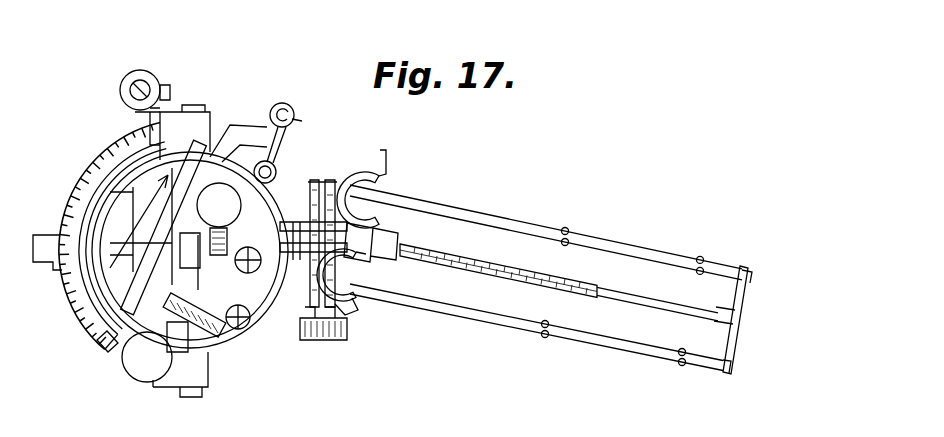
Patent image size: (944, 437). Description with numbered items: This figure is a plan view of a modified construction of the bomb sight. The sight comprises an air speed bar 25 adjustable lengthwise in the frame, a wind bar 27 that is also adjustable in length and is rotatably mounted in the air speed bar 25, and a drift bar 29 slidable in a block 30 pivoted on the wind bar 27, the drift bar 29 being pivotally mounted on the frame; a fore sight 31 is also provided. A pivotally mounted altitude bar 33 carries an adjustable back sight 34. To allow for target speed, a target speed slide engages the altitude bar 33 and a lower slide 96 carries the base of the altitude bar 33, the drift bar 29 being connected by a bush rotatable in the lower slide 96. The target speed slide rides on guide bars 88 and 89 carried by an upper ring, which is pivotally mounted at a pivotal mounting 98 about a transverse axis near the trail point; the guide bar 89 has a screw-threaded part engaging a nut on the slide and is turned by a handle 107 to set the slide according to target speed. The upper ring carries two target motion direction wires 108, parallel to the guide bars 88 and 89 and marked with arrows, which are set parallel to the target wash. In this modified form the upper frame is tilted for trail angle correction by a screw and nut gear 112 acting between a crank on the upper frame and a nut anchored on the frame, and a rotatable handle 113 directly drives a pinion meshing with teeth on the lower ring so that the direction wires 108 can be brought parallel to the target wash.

The air speed bar 25 is at (300, 212).
The wind bar 27 is at (300, 292).
The drift bar 29 is at (452, 254).
The block 30 is at (336, 262).
The fore sight 31 is at (372, 230).
The altitude bar 33 is at (277, 172).
The back sight 34 is at (294, 118).
The guide bar 88 is at (219, 158).
The guide bar 89 is at (116, 350).
The lower slide 96 is at (178, 215).
The pivotal mounting 98 is at (188, 397).
The handle 107 is at (222, 355).
The target motion direction wires 108 is at (152, 200).
The screw and nut gear 112 is at (160, 97).
The rotatable handle 113 is at (150, 368).